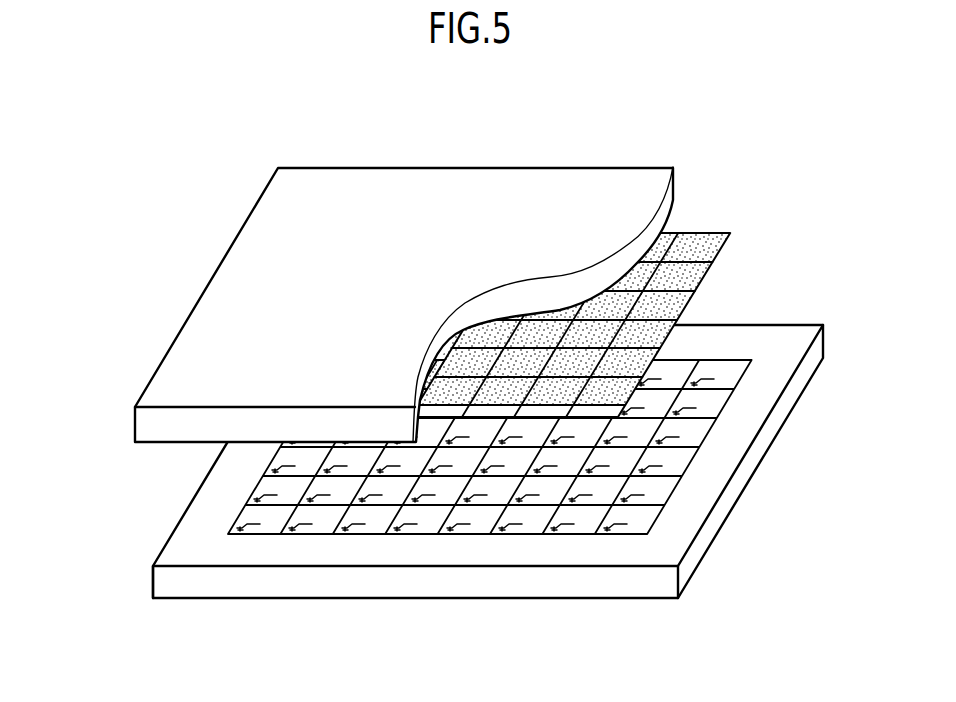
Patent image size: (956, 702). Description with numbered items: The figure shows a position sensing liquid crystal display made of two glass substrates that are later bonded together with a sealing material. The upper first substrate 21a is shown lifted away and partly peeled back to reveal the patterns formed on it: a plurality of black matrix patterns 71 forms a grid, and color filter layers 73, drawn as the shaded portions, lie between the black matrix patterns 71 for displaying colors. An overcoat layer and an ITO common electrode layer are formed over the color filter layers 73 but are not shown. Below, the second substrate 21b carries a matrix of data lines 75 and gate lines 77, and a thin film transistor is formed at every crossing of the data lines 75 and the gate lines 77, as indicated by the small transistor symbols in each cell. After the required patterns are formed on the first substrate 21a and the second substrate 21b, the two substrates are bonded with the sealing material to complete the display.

The first substrate 21a is at (160, 427).
The second substrate 21b is at (602, 565).
The black matrix patterns 71 is at (716, 256).
The color filter layers 73 is at (706, 228).
The data lines 75 is at (642, 452).
The gate lines 77 is at (648, 503).